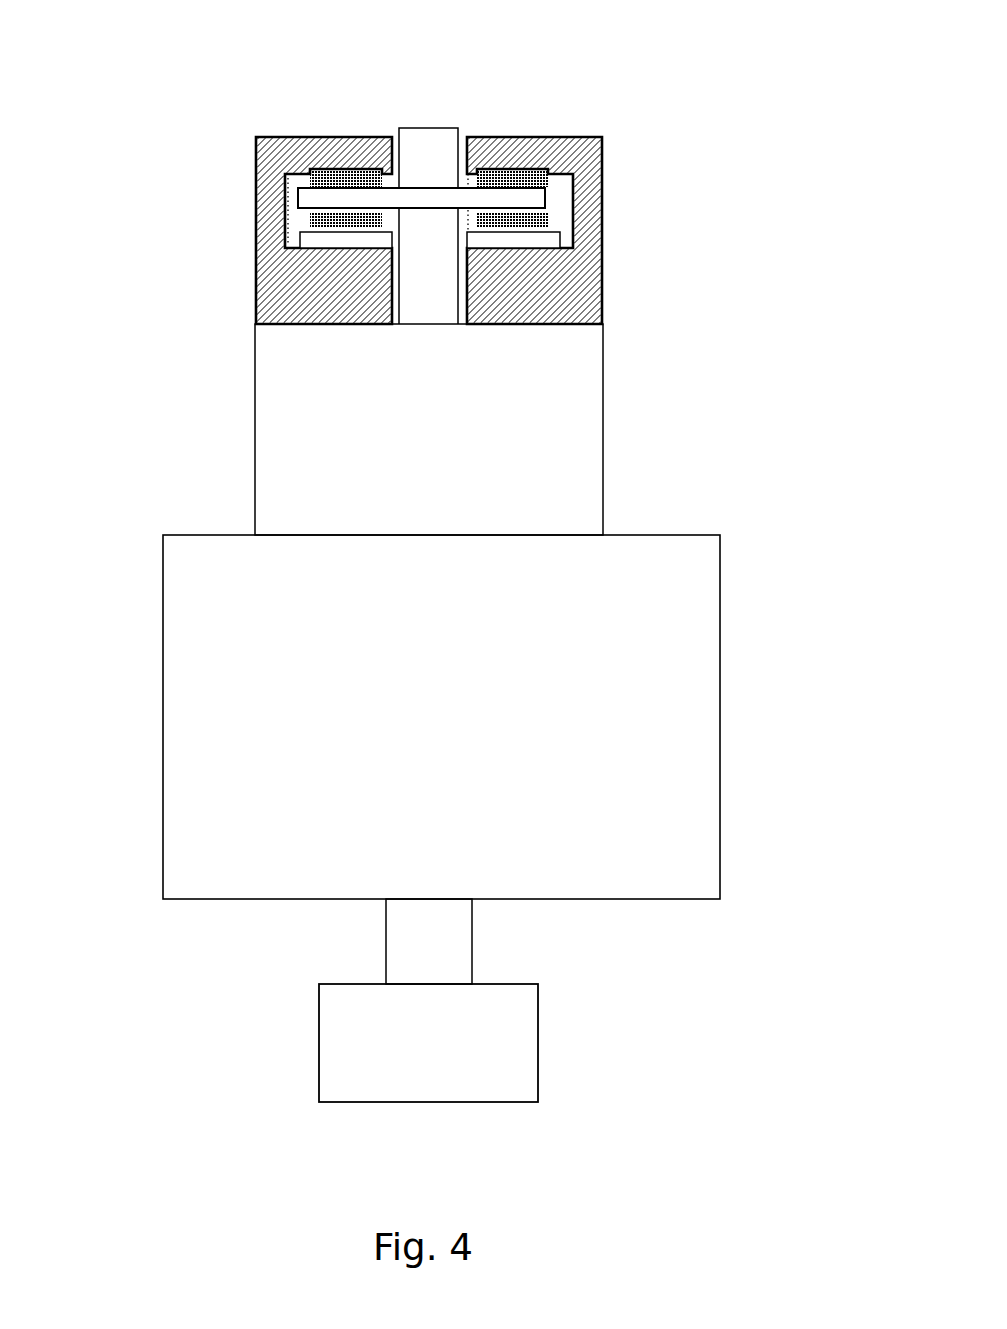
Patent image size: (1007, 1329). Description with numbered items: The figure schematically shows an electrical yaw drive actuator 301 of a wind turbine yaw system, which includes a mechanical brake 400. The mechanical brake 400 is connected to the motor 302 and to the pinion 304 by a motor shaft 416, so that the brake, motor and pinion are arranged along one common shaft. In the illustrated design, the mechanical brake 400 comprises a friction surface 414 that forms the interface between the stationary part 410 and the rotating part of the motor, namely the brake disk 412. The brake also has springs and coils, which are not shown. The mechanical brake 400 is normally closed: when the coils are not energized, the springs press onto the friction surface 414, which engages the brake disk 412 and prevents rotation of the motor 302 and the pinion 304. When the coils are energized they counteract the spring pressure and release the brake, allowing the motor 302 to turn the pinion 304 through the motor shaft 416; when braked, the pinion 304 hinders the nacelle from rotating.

The electrical yaw drive actuator 301 is at (664, 98).
The motor 302 is at (240, 632).
The pinion 304 is at (332, 1046).
The mechanical brake 400 is at (228, 205).
The stationary part 410 is at (563, 302).
The brake disk 412 is at (378, 197).
The friction surface 414 is at (533, 227).
The motor shaft 416 is at (425, 142).